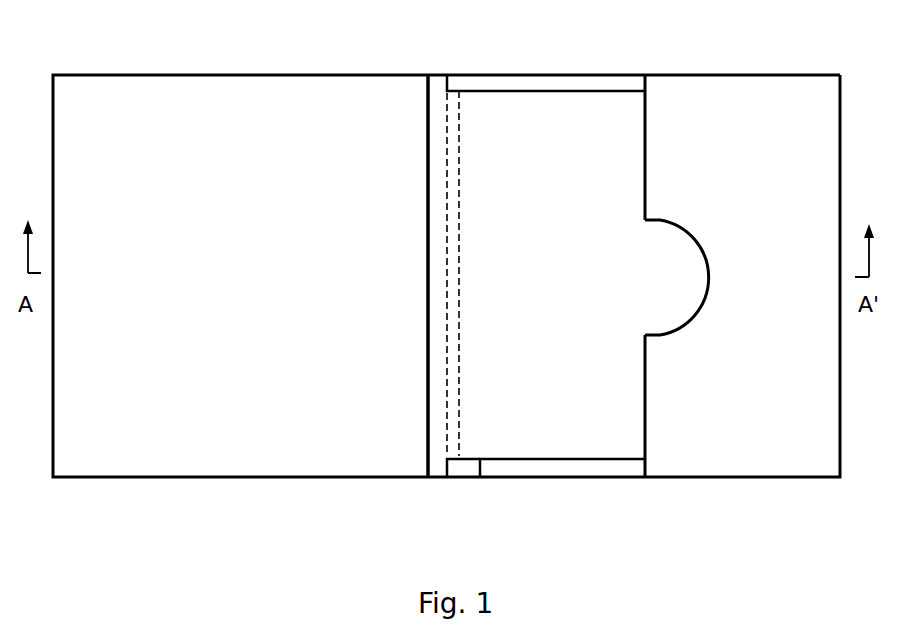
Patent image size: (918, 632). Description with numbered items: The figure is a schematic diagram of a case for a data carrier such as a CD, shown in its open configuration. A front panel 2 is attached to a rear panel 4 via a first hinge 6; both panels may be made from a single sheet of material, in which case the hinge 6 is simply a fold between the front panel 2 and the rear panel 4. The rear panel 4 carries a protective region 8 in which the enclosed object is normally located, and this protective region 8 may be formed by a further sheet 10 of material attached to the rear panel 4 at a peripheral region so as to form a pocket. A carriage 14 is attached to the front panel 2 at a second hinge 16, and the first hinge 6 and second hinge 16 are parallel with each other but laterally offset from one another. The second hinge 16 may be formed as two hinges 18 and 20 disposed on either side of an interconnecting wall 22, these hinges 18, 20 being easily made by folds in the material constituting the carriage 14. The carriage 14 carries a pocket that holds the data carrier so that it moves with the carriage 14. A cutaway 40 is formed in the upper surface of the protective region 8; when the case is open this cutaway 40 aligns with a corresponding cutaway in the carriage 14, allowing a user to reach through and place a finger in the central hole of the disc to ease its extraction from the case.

The front panel 2 is at (257, 463).
The rear panel 4 is at (565, 477).
The first hinge 6 is at (480, 477).
The protective region 8 is at (718, 102).
The further sheet 10 is at (745, 467).
The carriage 14 is at (516, 113).
The second hinge 16 is at (467, 486).
The hinge 18 is at (459, 377).
The hinge 20 is at (445, 415).
The interconnecting wall 22 is at (455, 254).
The cutaway 40 is at (706, 271).